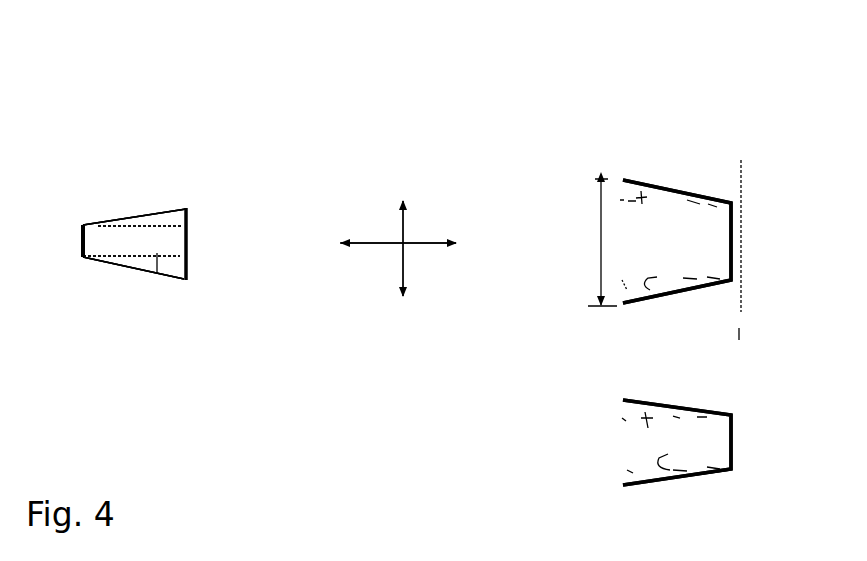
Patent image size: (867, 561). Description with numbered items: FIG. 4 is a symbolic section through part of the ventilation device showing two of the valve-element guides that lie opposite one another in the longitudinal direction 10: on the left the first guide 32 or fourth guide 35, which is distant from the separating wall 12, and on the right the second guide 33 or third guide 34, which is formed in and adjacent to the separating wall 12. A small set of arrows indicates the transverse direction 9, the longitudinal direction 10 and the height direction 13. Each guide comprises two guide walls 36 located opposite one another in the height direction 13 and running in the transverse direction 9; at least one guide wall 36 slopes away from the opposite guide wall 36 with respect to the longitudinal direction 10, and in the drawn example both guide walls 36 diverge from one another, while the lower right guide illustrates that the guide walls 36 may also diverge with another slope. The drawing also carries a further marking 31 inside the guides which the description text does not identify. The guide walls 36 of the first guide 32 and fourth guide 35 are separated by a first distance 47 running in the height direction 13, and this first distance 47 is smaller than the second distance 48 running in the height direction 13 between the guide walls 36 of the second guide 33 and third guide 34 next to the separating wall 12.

The separating wall 12 is at (94, 71).
The first guide 32 is at (51, 184).
The fourth guide 35 is at (134, 191).
The guide wall 36 is at (152, 210).
The contact surface 31 is at (119, 219).
The first distance 47 is at (187, 245).
The second guide 33 is at (753, 108).
The third guide 34 is at (626, 287).
The second distance 48 is at (601, 261).
The transverse direction 9 is at (399, 249).
The longitudinal direction 10 is at (434, 253).
The height direction 13 is at (403, 230).